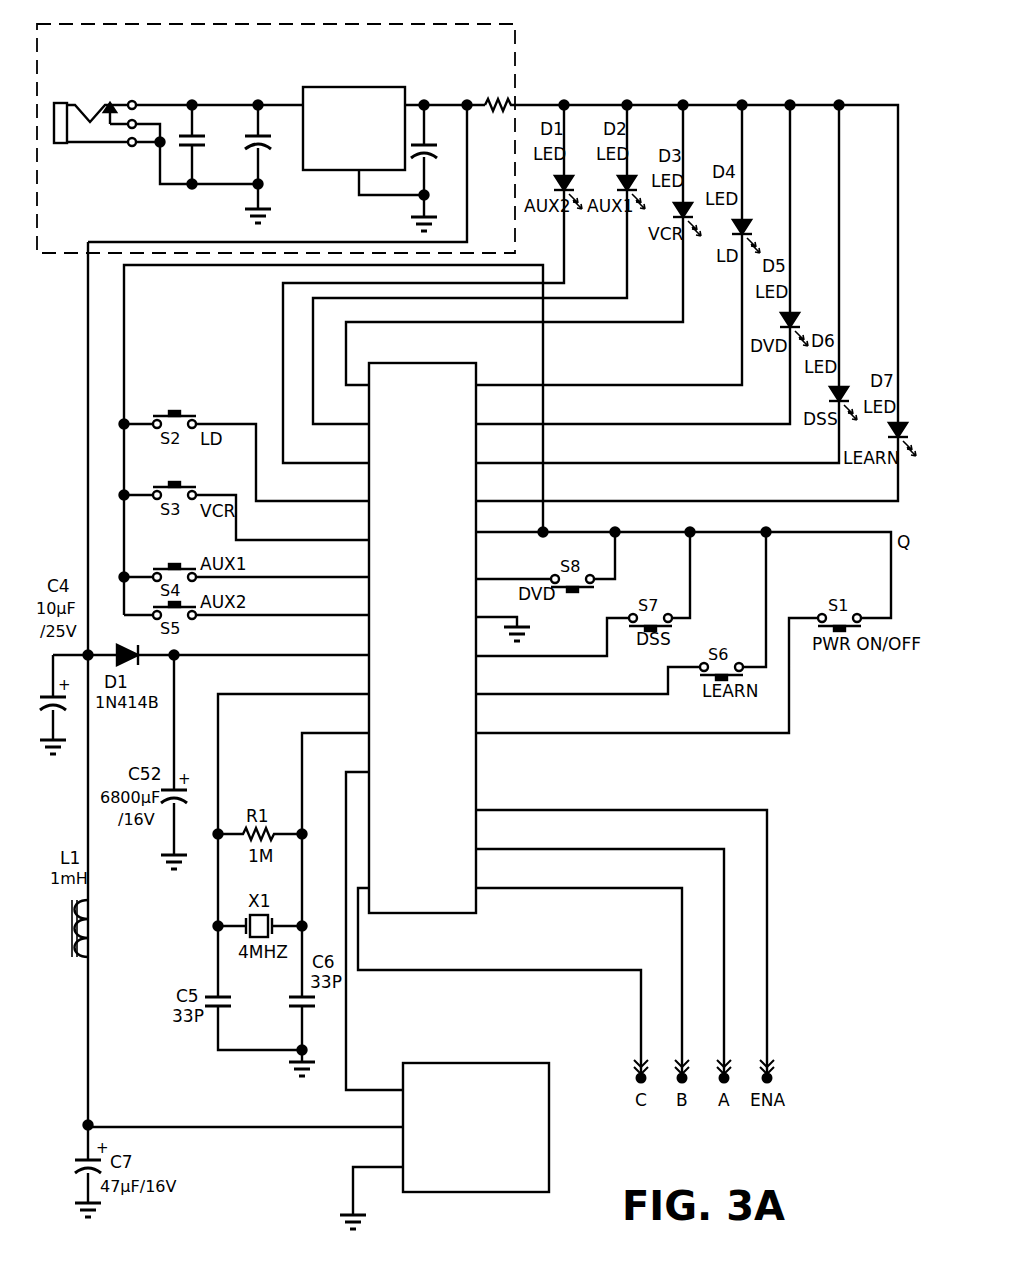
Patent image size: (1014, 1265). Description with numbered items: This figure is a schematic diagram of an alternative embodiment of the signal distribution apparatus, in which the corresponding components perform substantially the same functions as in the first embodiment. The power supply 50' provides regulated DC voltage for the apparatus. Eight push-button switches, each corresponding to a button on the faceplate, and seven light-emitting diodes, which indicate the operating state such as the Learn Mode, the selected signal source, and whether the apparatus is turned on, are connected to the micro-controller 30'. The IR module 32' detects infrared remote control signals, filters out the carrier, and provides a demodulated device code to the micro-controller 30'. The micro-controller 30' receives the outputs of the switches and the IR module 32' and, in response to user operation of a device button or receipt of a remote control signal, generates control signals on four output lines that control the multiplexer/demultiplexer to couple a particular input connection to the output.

The power supply 50' is at (306, 130).
The micro-controller 30' is at (465, 642).
The IR module 32' is at (476, 1146).